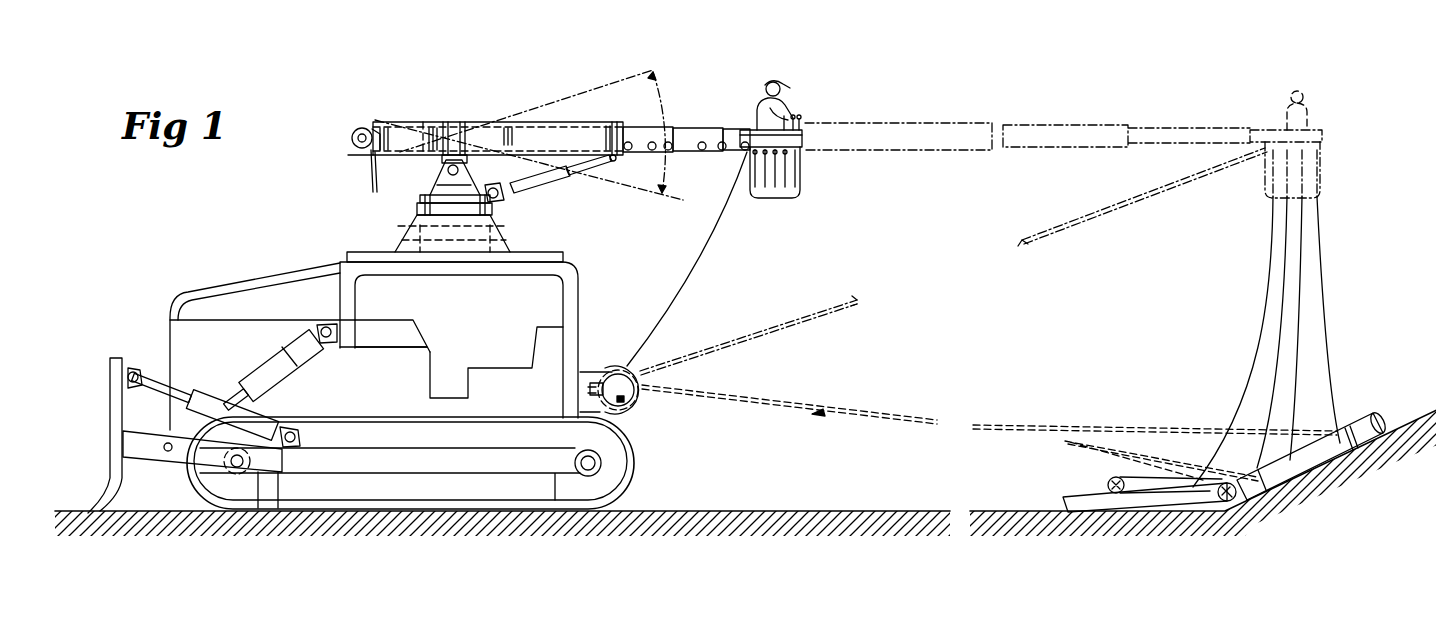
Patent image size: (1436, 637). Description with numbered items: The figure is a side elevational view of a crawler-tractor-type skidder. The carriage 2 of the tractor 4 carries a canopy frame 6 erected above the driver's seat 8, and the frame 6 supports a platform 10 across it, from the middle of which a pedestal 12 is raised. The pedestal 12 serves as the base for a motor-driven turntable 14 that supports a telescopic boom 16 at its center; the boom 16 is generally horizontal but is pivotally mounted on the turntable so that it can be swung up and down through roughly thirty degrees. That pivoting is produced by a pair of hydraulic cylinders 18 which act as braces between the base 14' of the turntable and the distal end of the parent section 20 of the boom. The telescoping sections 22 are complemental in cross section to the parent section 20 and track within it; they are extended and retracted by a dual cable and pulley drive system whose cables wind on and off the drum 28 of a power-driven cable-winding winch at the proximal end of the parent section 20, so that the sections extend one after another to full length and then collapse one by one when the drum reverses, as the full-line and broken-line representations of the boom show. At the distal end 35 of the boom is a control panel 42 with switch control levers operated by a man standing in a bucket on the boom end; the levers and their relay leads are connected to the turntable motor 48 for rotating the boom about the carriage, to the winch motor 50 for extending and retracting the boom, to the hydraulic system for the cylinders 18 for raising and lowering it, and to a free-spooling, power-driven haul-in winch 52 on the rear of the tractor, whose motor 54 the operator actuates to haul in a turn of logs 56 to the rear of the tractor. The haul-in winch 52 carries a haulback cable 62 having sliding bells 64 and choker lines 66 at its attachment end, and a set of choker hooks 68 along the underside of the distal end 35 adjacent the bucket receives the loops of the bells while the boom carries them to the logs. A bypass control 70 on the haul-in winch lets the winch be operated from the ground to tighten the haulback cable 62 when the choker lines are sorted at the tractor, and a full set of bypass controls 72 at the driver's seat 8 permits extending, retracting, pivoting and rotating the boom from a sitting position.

The carriage 2 is at (357, 402).
The tractor 4 is at (138, 280).
The canopy frame 6 is at (566, 294).
The driver's seat 8 is at (482, 368).
The platform 10 is at (368, 258).
The pedestal 12 is at (435, 232).
The turntable 14 is at (430, 175).
The base of the turntable 14' is at (416, 204).
The telescopic boom 16 is at (478, 119).
The hydraulic cylinders 18 is at (565, 187).
The parent section 20 is at (584, 135).
The telescoping sections 22 is at (690, 120).
The drum 28 is at (358, 126).
The distal end of the boom 35 is at (810, 138).
The control panel 42 is at (802, 121).
The turntable motor 48 is at (508, 226).
The winch motor 50 is at (350, 153).
The haul-in winch 52 is at (647, 410).
The motor of the haul-in winch 54 is at (632, 388).
The logs 56 is at (1207, 510).
The haulback cable 62 is at (703, 241).
The sliding bells 64 is at (1072, 438).
The choker lines 66 is at (1295, 348).
The choker hooks 68 is at (772, 158).
The bypass control 70 is at (622, 405).
The bypass control 72 is at (410, 330).